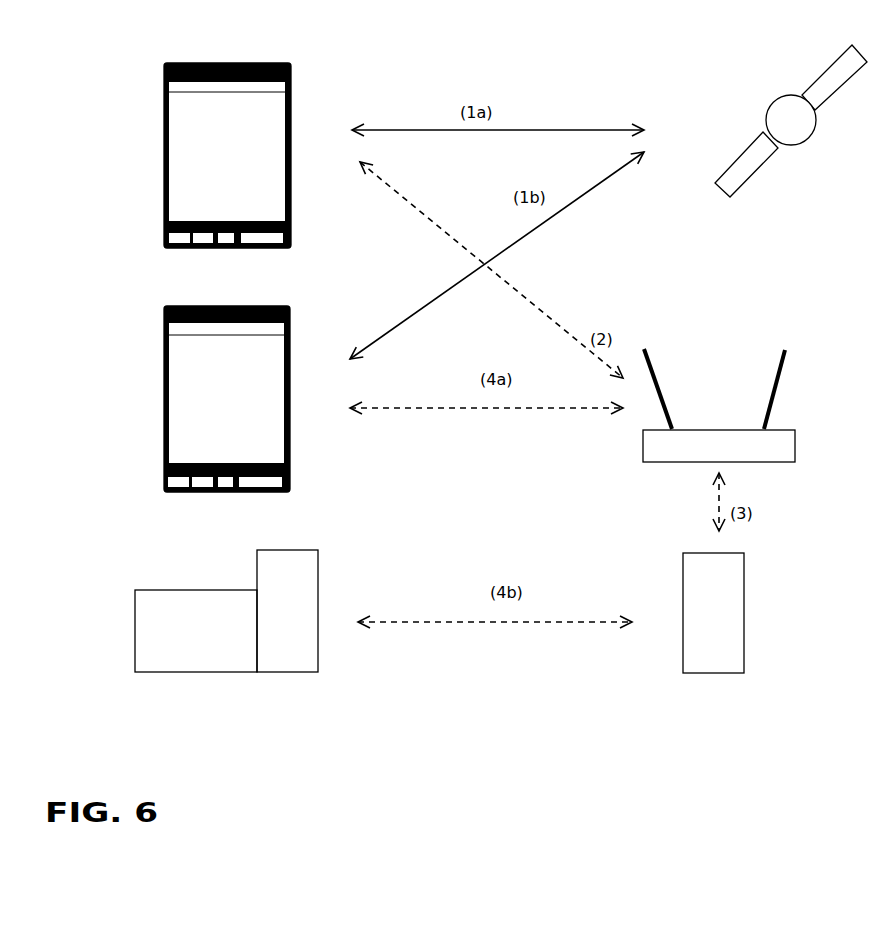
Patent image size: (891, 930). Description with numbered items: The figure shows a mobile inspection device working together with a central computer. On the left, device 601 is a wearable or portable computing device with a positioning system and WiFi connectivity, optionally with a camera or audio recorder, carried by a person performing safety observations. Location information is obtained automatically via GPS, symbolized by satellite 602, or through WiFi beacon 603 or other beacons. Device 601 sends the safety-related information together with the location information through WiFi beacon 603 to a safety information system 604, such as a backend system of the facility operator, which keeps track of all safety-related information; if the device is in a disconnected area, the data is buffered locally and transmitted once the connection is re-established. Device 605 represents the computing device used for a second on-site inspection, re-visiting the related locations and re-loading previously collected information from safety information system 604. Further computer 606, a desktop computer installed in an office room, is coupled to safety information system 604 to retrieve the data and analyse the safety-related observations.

The device 601 is at (164, 106).
The satellite 602 is at (772, 98).
The WiFi beacon 603 is at (775, 370).
The safety information system 604 is at (683, 583).
The device 605 is at (164, 376).
The further computer 606 is at (135, 598).